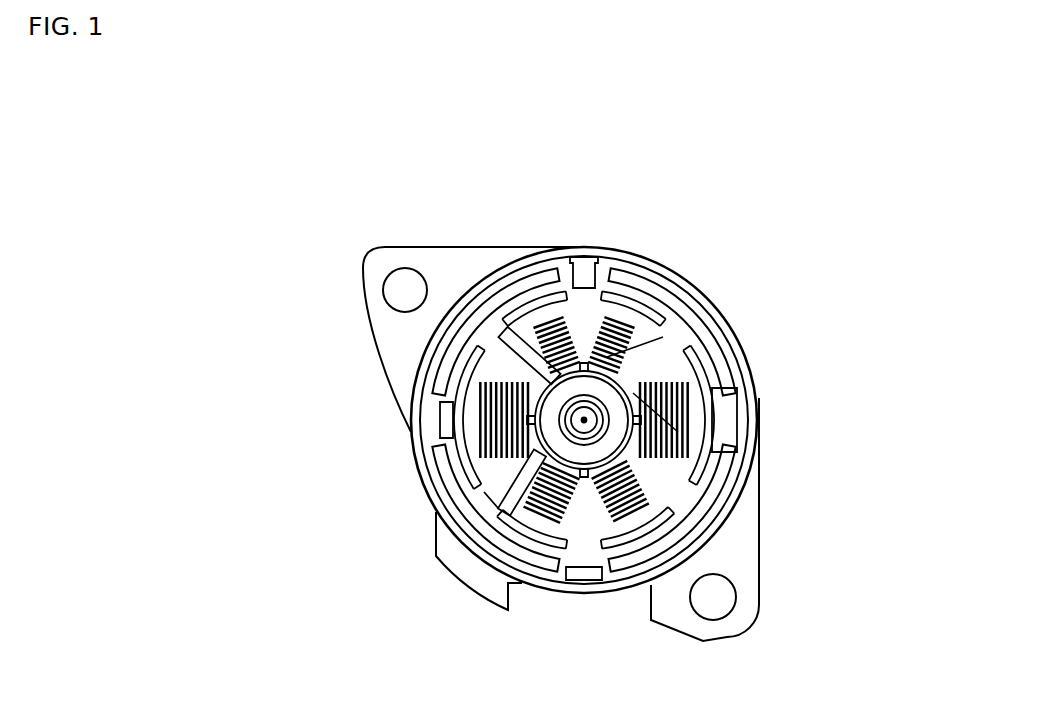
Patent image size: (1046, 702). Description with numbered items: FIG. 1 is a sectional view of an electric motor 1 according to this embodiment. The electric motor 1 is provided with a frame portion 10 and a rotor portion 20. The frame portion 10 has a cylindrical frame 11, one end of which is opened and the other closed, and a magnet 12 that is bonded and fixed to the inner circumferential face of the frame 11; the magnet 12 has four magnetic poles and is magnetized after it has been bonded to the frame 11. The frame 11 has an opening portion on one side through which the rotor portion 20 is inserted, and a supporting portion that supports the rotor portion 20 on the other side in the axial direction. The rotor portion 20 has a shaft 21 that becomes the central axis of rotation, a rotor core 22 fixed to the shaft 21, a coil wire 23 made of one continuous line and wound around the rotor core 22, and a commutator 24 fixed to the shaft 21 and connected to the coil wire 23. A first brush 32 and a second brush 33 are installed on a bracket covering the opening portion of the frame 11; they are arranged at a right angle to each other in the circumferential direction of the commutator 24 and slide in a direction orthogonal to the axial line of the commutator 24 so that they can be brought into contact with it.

The electric motor 1 is at (586, 333).
The frame portion 10 is at (688, 265).
The frame 11 is at (744, 567).
The magnet 12 is at (505, 300).
The rotor portion 20 is at (618, 362).
The shaft 21 is at (585, 420).
The rotor core 22 is at (702, 392).
The coil wire 23 is at (500, 408).
The commutator 24 is at (615, 437).
The first brush 32 is at (518, 352).
The second brush 33 is at (503, 503).